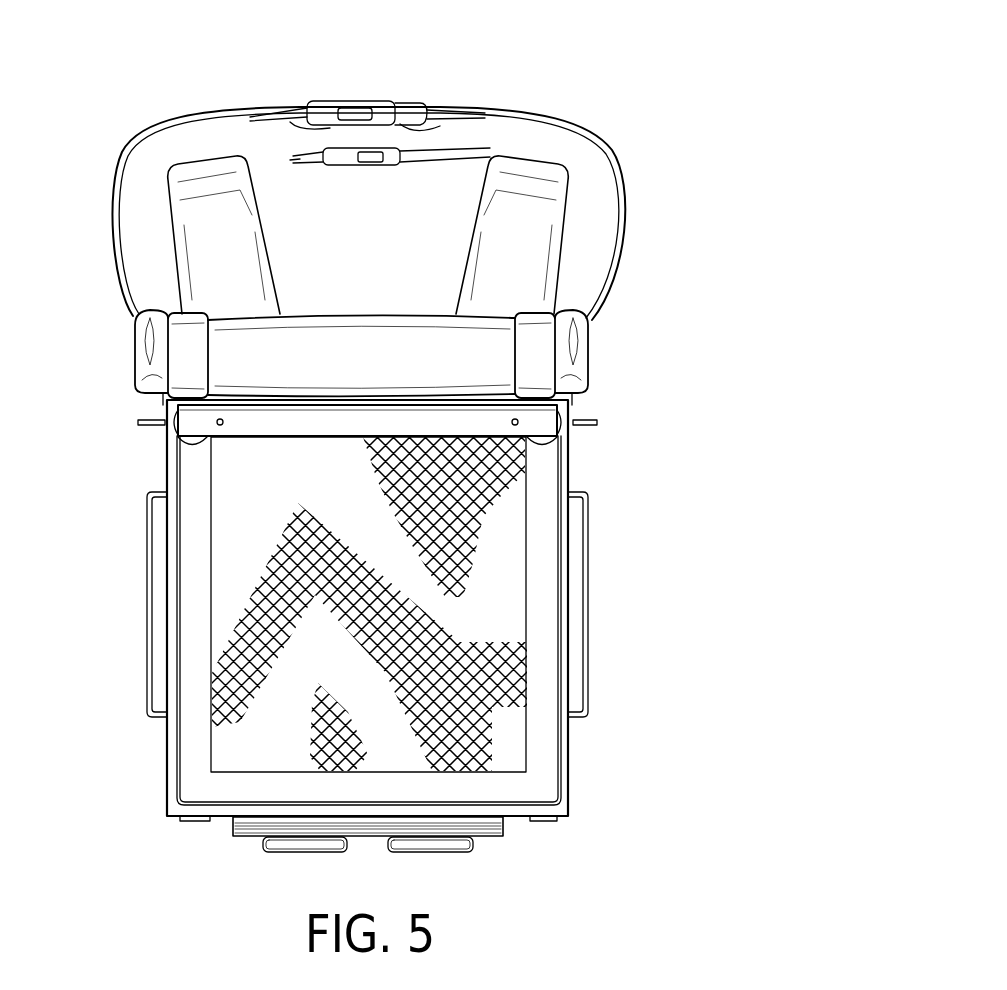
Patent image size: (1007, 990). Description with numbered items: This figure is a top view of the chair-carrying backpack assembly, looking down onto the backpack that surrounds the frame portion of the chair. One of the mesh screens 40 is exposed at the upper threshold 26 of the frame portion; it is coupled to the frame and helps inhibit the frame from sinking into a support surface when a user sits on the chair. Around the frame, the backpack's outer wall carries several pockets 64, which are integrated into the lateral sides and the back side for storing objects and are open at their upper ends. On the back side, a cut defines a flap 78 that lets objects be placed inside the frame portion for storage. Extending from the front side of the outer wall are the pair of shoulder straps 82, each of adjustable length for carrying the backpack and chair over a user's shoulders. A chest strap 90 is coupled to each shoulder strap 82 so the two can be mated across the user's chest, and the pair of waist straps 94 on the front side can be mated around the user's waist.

The upper threshold 26 is at (193, 520).
The mesh screens 40 is at (447, 525).
The pockets 64 is at (148, 638).
The flap 78 is at (168, 565).
The shoulder straps 82 is at (195, 163).
The chest straps 90 is at (257, 160).
The waist straps 94 is at (142, 138).